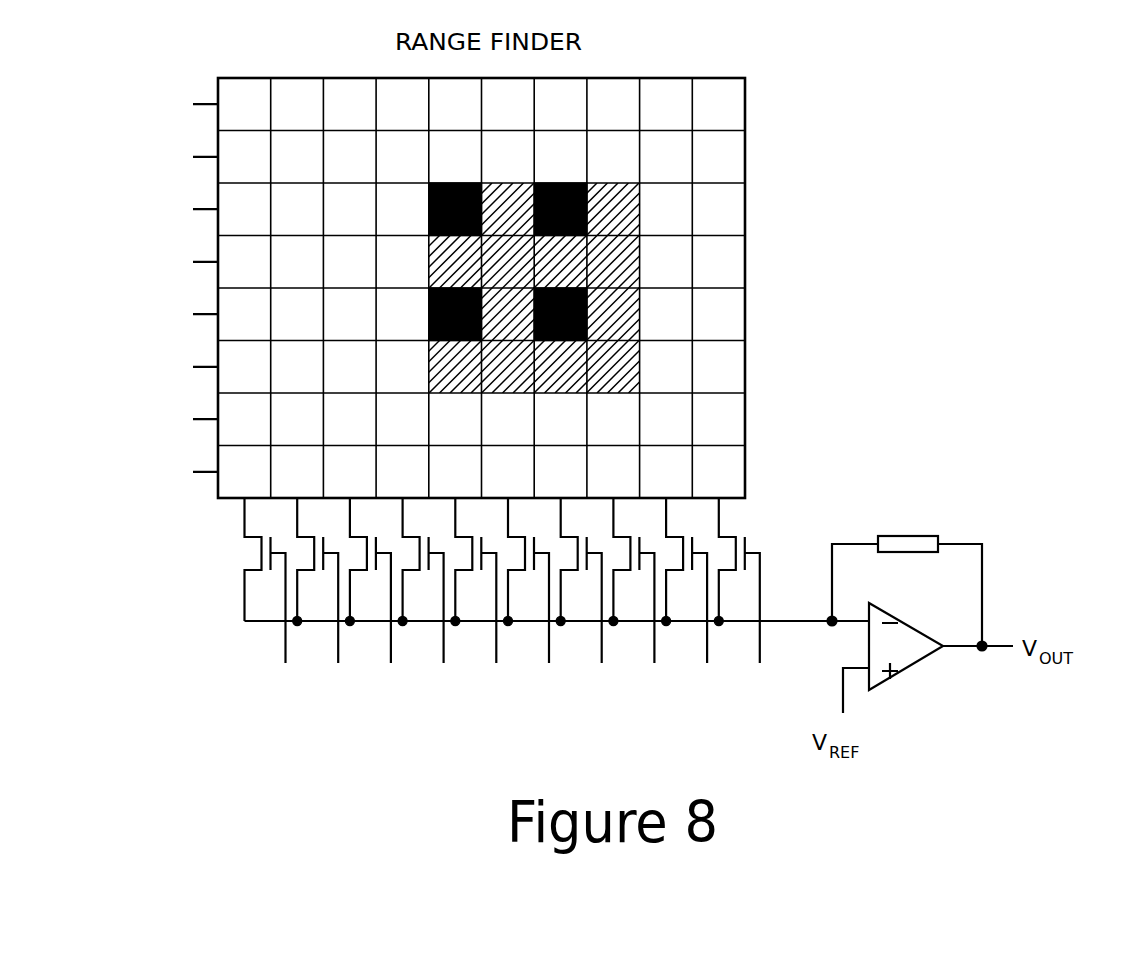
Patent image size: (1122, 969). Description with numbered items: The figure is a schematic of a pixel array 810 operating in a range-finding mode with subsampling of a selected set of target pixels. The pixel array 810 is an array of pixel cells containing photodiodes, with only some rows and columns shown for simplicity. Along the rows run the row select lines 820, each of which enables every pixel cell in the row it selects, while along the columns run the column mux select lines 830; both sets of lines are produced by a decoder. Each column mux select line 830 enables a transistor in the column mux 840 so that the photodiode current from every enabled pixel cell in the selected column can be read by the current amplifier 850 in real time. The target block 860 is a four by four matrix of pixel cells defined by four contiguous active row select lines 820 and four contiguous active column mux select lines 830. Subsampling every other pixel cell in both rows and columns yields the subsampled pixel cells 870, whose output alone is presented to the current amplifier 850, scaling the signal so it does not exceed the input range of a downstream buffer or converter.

The pixel array 810 is at (746, 78).
The row select lines 820 is at (170, 320).
The column mux select lines 830 is at (424, 704).
The column mux 840 is at (234, 551).
The current amplifier 850 is at (908, 512).
The target block 860 is at (606, 176).
The subsampled pixel cells 870 is at (465, 183).